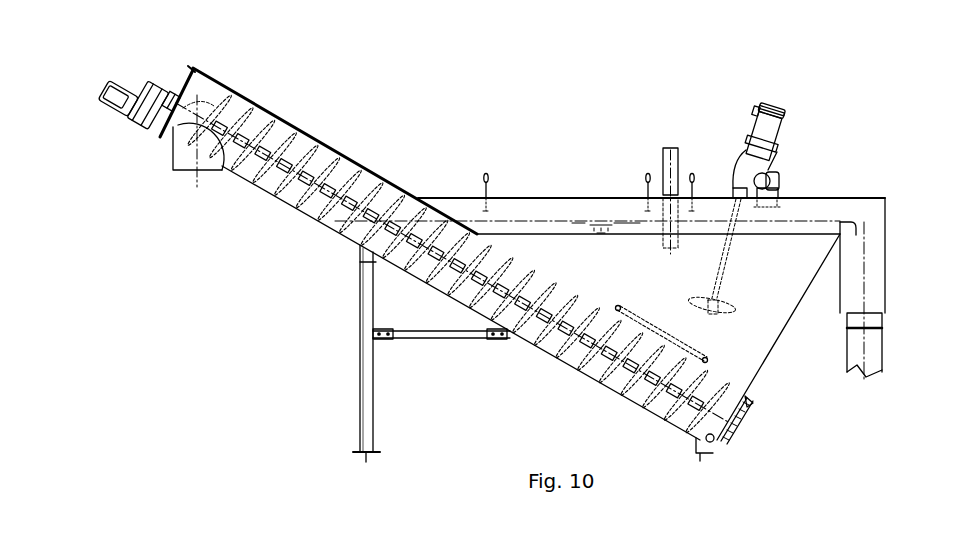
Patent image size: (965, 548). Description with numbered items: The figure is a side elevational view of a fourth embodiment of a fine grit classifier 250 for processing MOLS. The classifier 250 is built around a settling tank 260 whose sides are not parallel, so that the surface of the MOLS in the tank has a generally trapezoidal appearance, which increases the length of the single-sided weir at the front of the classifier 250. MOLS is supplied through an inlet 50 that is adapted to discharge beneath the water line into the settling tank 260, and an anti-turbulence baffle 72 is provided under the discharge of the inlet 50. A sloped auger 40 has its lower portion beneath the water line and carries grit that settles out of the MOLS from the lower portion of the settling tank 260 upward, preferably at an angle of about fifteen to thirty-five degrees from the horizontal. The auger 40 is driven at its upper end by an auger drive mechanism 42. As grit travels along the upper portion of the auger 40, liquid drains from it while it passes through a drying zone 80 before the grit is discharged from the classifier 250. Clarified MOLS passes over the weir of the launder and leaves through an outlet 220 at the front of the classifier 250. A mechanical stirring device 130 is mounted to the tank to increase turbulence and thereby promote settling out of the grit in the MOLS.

The sloped auger 40 is at (342, 167).
The auger drive mechanism 42 is at (150, 80).
The MOLS inlet 50 is at (660, 157).
The anti-turbulence baffle 72 is at (698, 352).
The drying zone 80 is at (222, 169).
The mechanical stirring device 130 is at (787, 103).
The outlet 220 is at (882, 323).
The fine grit classifier 250 is at (299, 322).
The settling tank 260 is at (610, 287).